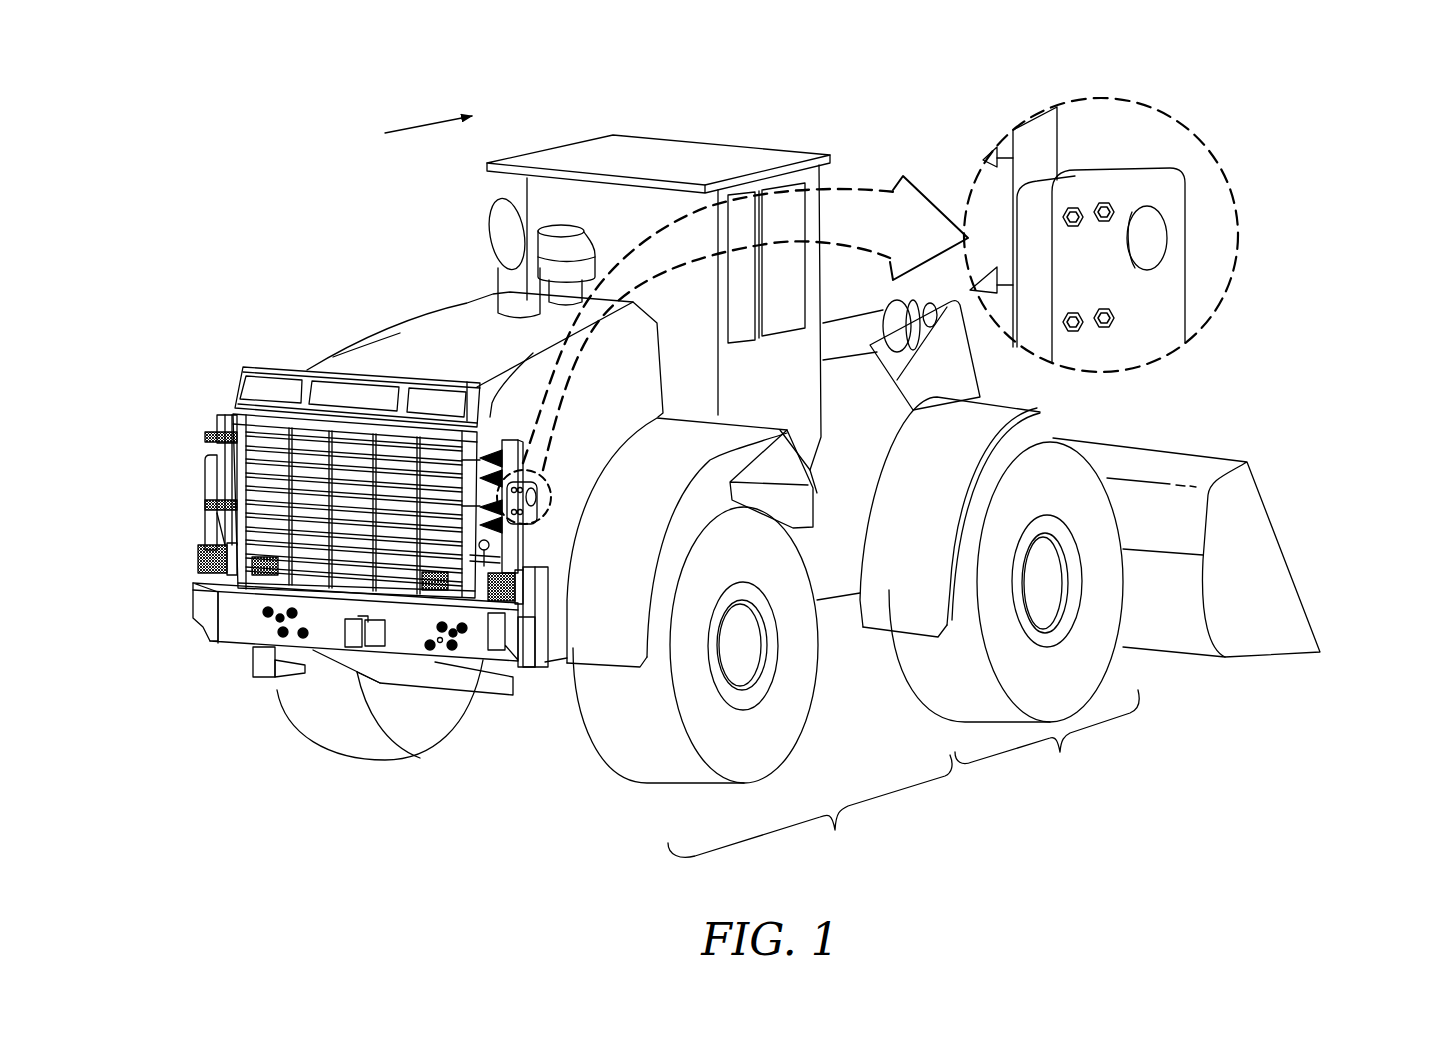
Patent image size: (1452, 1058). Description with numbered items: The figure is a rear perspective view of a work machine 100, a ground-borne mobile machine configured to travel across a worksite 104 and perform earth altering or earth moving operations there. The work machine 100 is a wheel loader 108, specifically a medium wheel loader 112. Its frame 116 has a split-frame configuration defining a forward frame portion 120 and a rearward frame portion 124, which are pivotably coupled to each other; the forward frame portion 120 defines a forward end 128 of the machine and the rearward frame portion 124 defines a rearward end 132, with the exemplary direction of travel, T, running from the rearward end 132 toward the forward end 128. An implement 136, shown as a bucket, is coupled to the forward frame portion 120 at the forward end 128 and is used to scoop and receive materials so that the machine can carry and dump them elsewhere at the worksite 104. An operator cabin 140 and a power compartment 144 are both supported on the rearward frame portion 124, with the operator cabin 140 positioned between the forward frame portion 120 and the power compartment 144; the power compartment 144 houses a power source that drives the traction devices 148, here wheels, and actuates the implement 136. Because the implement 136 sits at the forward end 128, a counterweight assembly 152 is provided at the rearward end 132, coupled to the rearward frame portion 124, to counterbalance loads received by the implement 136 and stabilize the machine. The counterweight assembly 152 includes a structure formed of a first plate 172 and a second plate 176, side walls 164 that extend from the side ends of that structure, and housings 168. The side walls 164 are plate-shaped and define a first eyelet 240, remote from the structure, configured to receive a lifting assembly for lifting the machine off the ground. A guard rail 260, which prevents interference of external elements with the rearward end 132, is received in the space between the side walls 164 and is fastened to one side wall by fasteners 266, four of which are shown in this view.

The work machine 100 is at (230, 203).
The worksite 104 is at (1218, 403).
The wheel loader 108 is at (158, 648).
The medium wheel loader 112 is at (1364, 600).
The frame 116 is at (563, 650).
The forward frame portion 120 is at (1047, 738).
The rearward frame portion 124 is at (810, 806).
The forward end 128 is at (1278, 372).
The rearward end 132 is at (228, 668).
The implement 136 is at (1263, 500).
The operator cabin 140 is at (782, 150).
The power compartment 144 is at (333, 357).
The traction devices 148 is at (290, 723).
The counterweight assembly 152 is at (480, 642).
The side walls 164 is at (205, 481).
The housings 168 is at (198, 558).
The first plate 172 is at (320, 635).
The second plate 176 is at (215, 600).
The first eyelet 240 is at (1153, 223).
The guard rail 260 is at (236, 390).
The fasteners 266 is at (1110, 203).